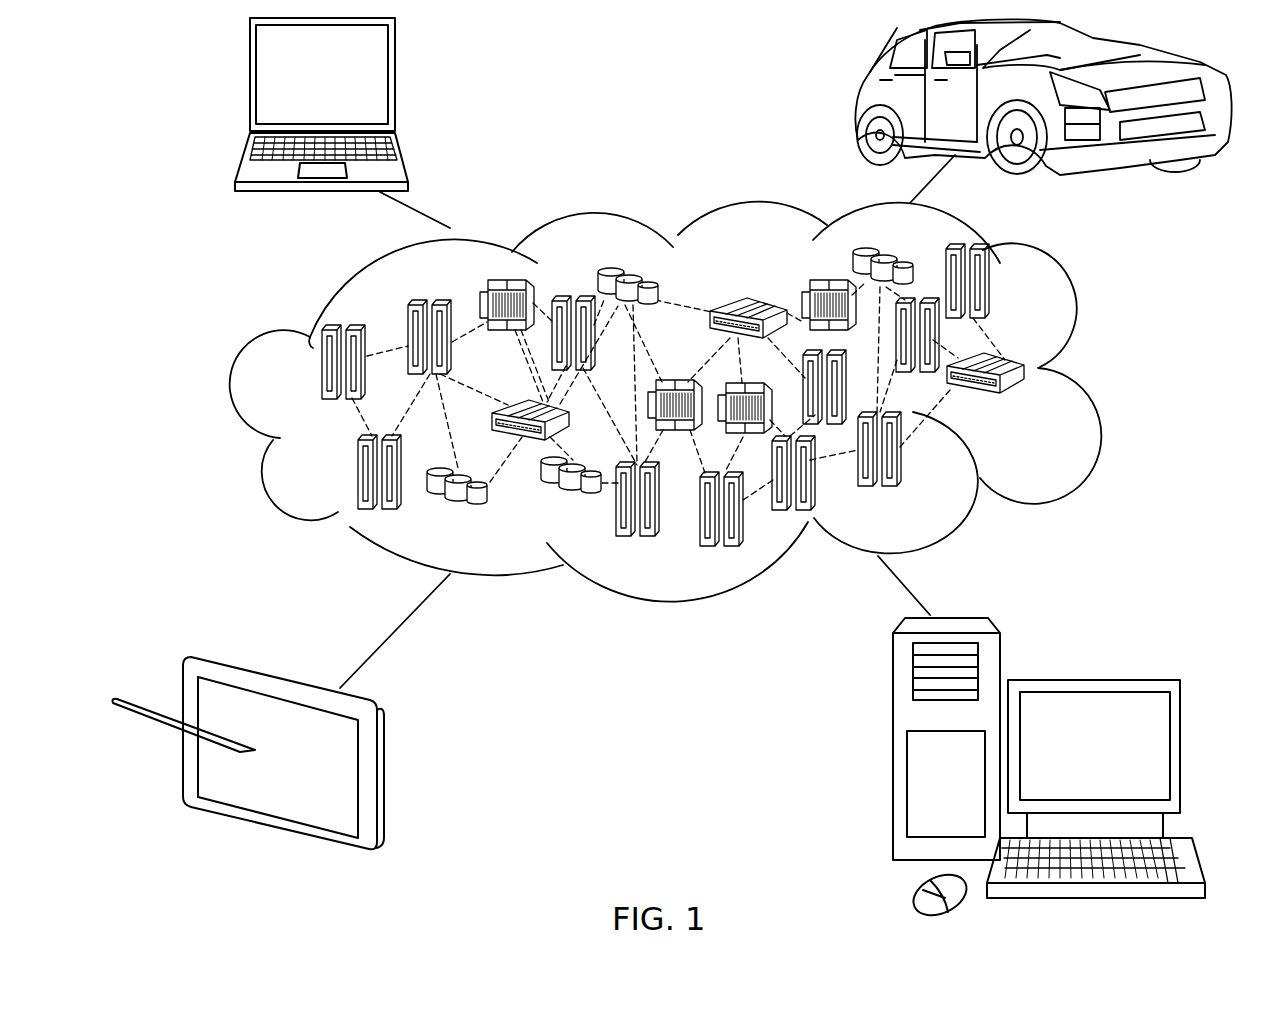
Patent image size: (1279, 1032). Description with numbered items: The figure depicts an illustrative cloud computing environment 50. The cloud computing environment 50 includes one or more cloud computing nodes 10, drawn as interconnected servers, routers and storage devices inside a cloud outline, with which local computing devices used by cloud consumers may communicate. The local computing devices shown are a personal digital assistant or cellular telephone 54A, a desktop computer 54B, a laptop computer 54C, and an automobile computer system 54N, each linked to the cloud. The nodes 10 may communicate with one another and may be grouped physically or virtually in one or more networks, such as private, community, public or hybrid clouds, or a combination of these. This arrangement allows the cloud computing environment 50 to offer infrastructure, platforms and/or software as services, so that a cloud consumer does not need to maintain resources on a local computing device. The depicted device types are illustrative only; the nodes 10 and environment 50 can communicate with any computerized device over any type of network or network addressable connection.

The cloud computing nodes 10 is at (1030, 404).
The cloud computing environment 50 is at (1093, 372).
The personal digital assistant or cellular telephone 54A is at (383, 778).
The desktop computer 54B is at (1090, 680).
The laptop computer 54C is at (395, 83).
The automobile computer system 54N is at (857, 100).